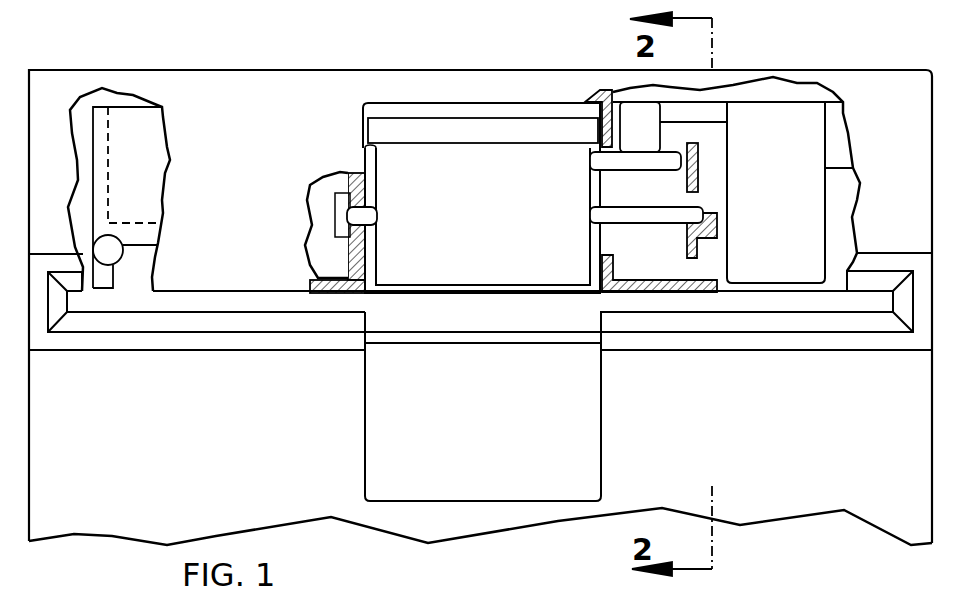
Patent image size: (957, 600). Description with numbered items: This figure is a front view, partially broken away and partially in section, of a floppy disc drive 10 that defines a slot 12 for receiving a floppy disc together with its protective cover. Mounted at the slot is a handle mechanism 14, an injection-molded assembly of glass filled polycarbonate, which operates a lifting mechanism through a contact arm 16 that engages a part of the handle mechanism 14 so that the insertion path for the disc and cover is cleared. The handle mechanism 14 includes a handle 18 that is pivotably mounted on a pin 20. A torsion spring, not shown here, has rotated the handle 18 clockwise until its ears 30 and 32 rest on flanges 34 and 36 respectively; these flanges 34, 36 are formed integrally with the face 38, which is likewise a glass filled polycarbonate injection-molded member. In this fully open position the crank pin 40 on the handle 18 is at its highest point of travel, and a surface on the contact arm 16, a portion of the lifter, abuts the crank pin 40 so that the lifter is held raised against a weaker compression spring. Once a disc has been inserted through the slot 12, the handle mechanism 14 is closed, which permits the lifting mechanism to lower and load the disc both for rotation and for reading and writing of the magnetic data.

The floppy disc drive 10 is at (110, 58).
The slot 12 is at (863, 300).
The handle mechanism 14 is at (400, 108).
The contact arm 16 is at (653, 133).
The handle 18 is at (457, 134).
The pin 20 is at (655, 218).
The ear 30 is at (572, 118).
The ear 32 is at (370, 128).
The flange 34 is at (597, 148).
The flange 36 is at (363, 157).
The face 38 is at (258, 82).
The crank pin 40 is at (615, 166).